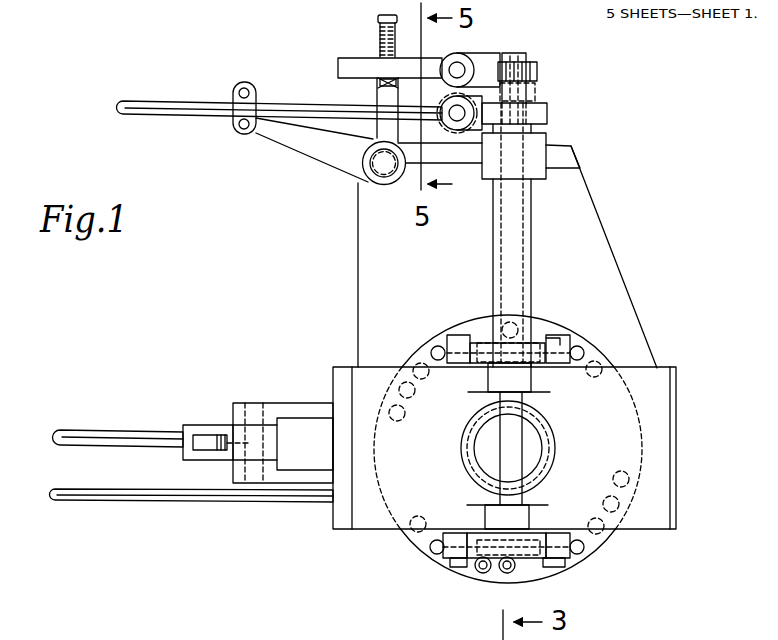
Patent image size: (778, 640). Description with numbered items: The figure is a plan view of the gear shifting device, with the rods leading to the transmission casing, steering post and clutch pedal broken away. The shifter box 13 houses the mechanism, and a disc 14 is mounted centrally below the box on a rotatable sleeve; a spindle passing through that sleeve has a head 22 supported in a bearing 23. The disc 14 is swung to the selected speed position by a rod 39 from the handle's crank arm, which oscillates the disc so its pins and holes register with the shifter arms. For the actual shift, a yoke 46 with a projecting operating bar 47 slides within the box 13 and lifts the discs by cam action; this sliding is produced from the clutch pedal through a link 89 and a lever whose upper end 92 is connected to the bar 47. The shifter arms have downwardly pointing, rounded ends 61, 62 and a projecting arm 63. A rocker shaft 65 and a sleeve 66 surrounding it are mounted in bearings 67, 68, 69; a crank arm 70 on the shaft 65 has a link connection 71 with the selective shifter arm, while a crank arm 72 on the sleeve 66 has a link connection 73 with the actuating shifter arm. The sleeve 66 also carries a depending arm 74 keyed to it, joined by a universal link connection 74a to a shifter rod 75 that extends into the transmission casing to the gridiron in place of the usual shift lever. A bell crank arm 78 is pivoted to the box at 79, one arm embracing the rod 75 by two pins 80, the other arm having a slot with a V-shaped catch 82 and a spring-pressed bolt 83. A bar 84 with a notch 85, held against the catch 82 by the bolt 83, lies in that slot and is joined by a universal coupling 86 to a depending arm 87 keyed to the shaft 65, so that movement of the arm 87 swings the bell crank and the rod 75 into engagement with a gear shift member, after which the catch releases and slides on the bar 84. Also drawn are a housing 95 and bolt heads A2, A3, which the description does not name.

The shifter box 13 is at (655, 399).
The disc 14 is at (410, 548).
The head 22 is at (527, 449).
The bearing 23 is at (548, 424).
The rod 39 is at (168, 493).
The yoke 46 is at (327, 448).
The projecting operating bar 47 is at (285, 432).
The downwardly pointing end 61 is at (433, 352).
The downwardly pointing end 62 is at (587, 351).
The projecting arm 63 is at (457, 338).
The rocker shaft 65 is at (503, 438).
The sleeve 66 is at (515, 218).
The bearing 67 is at (517, 518).
The bearing 68 is at (527, 355).
The bearing 69 is at (542, 157).
The crank arm 70 is at (540, 543).
The link connection 71 is at (573, 562).
The crank arm 72 is at (560, 356).
The link connection 73 is at (478, 337).
The depending arm 74 is at (539, 113).
The universal link connection 74a is at (478, 128).
The shifter rod 75 is at (147, 104).
The bell crank arm 78 is at (320, 153).
The pivot 79 is at (383, 165).
The pins 80 is at (246, 124).
The V-shaped catch 82 is at (378, 84).
The spring-pressed bolt 83 is at (392, 56).
The bar 84 is at (355, 63).
The notch 85 is at (378, 84).
The universal coupling 86 is at (480, 67).
The depending arm 87 is at (531, 72).
The link 89 is at (90, 437).
The upper end 92 is at (208, 435).
The housing 95 is at (203, 435).
The bolt head A2 is at (483, 573).
The bolt head A3 is at (507, 573).